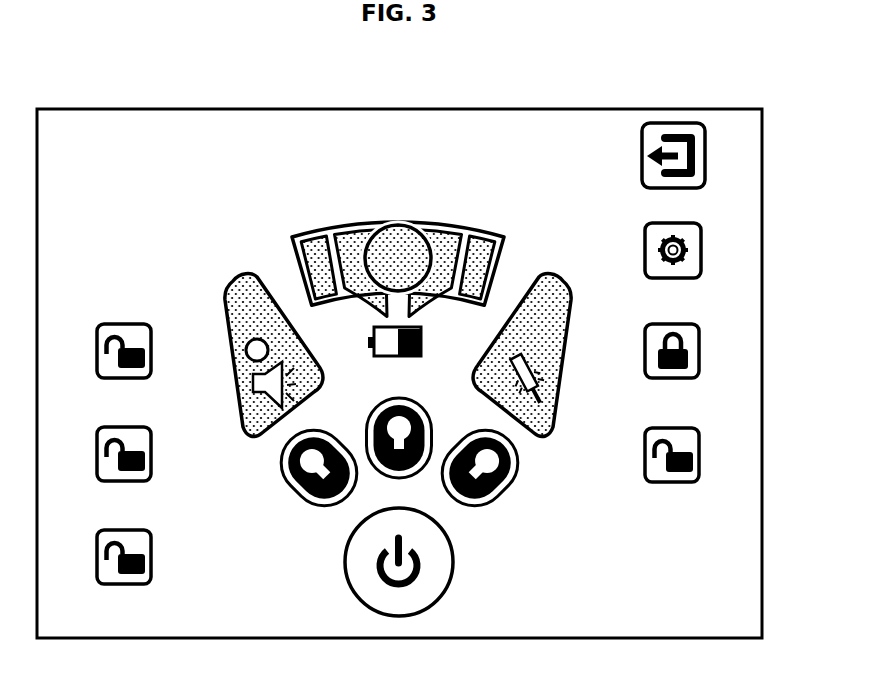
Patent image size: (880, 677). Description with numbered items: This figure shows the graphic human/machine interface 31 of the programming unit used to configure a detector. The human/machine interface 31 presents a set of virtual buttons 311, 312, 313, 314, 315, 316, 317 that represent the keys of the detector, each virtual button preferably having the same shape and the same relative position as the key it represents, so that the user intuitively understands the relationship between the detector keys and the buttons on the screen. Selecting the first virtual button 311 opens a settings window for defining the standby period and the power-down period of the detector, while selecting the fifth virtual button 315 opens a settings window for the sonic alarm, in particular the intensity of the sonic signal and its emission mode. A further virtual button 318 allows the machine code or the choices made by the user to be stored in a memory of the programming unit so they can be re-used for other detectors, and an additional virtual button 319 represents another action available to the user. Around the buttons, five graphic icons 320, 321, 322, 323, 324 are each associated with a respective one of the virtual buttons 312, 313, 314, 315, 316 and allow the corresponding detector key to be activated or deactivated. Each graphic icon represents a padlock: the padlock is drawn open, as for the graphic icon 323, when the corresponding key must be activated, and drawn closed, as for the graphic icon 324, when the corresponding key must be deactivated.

The human/machine interface 31 is at (506, 71).
The first virtual button 311 is at (458, 549).
The virtual button 312 is at (282, 468).
The virtual button 313 is at (425, 403).
The virtual button 314 is at (518, 468).
The fifth virtual button 315 is at (221, 378).
The virtual button 316 is at (579, 377).
The virtual button 317 is at (442, 221).
The virtual button for storing 318 is at (644, 252).
The virtual button 319 is at (641, 157).
The graphic icon 320 is at (156, 558).
The graphic icon 321 is at (156, 456).
The graphic icon 322 is at (156, 353).
The graphic icon 323 is at (643, 455).
The graphic icon 324 is at (643, 353).